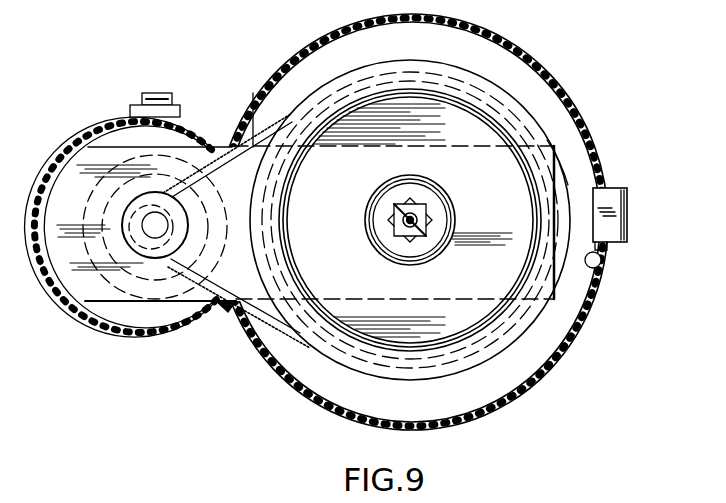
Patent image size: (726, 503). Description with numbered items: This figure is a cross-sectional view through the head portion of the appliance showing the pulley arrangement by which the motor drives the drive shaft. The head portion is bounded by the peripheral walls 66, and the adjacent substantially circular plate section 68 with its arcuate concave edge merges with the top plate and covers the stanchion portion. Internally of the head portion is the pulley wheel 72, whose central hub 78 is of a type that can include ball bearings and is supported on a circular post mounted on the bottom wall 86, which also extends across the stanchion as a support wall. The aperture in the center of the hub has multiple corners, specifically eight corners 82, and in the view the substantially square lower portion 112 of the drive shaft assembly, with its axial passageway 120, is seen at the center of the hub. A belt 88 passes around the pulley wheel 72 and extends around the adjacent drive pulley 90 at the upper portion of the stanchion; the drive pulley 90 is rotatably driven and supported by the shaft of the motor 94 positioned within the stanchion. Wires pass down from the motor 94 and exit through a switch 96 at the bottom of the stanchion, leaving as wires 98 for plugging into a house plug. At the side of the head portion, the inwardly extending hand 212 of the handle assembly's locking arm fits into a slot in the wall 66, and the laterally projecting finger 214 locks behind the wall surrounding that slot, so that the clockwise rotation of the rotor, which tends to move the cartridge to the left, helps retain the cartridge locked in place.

The peripheral walls 66 is at (336, 31).
The circular plate section 68 is at (253, 93).
The pulley wheel 72 is at (462, 66).
The central hub 78 is at (447, 209).
The corners 82 is at (403, 207).
The bottom wall 86 is at (557, 152).
The belt 88 is at (236, 232).
The drive pulley 90 is at (128, 199).
The motor 94 is at (73, 309).
The switch 96 is at (158, 93).
The wires 98 is at (30, 238).
The lower portion 112 is at (421, 213).
The axial passageway 120 is at (418, 238).
The hand 212 is at (622, 190).
The finger 214 is at (601, 266).